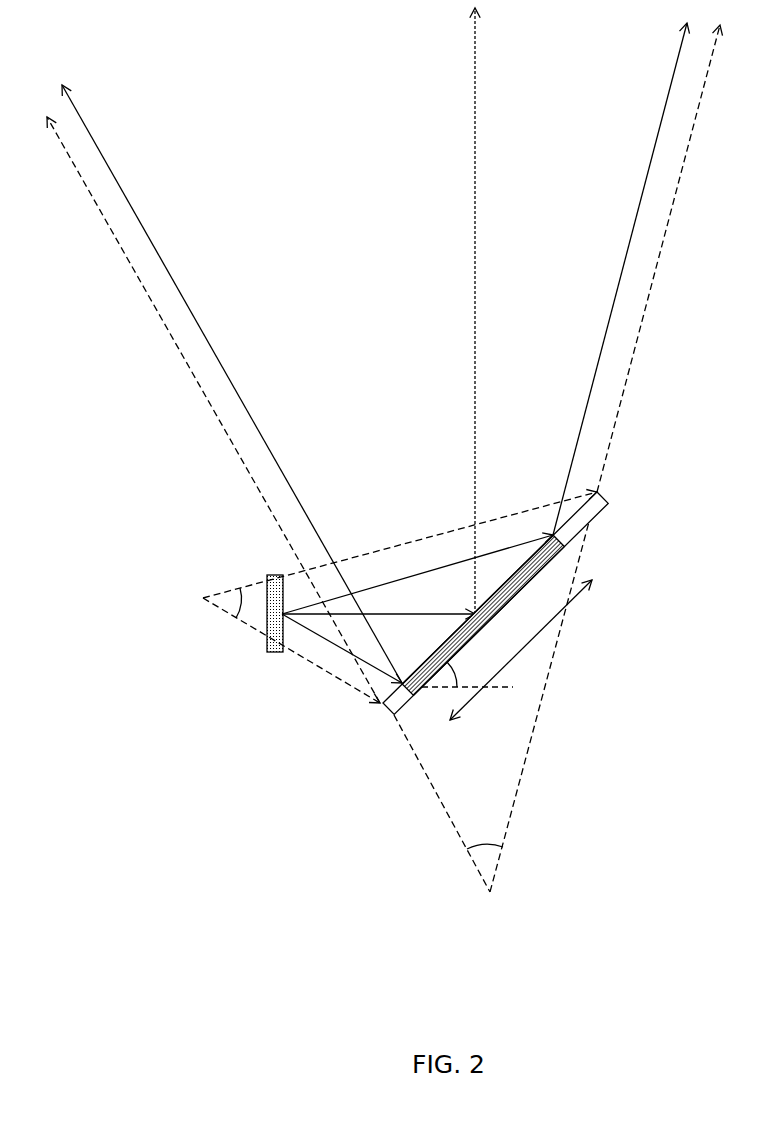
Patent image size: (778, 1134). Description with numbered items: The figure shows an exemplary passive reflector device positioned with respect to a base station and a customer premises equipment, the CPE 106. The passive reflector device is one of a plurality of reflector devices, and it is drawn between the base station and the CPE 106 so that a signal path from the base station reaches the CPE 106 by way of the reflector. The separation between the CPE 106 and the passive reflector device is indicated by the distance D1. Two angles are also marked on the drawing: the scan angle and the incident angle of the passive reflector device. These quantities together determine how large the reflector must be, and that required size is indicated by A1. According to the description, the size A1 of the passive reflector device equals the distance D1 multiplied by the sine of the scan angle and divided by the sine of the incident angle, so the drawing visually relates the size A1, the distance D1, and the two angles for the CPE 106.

The light source 106 is at (268, 650).
The distance D1 is at (378, 606).
The axis A1 is at (521, 650).